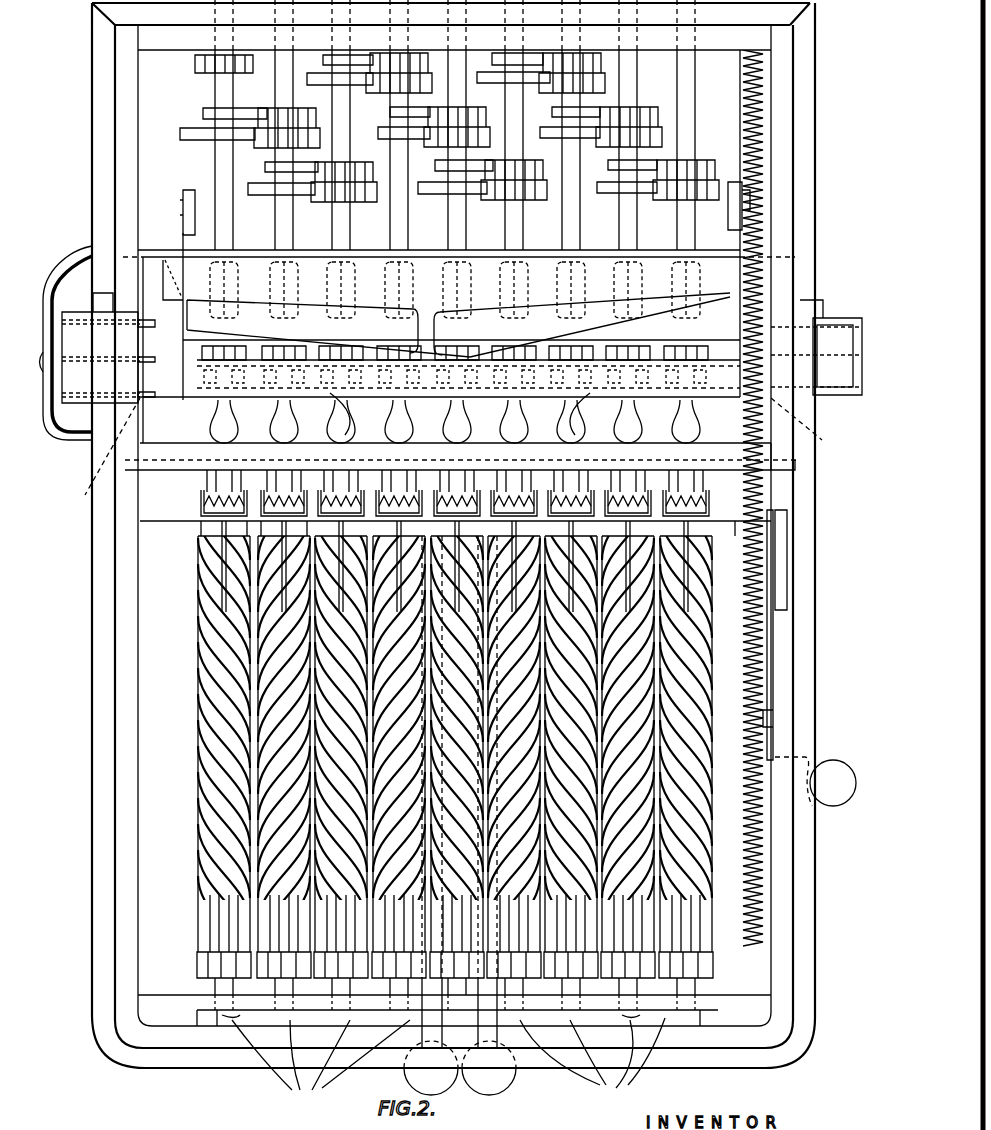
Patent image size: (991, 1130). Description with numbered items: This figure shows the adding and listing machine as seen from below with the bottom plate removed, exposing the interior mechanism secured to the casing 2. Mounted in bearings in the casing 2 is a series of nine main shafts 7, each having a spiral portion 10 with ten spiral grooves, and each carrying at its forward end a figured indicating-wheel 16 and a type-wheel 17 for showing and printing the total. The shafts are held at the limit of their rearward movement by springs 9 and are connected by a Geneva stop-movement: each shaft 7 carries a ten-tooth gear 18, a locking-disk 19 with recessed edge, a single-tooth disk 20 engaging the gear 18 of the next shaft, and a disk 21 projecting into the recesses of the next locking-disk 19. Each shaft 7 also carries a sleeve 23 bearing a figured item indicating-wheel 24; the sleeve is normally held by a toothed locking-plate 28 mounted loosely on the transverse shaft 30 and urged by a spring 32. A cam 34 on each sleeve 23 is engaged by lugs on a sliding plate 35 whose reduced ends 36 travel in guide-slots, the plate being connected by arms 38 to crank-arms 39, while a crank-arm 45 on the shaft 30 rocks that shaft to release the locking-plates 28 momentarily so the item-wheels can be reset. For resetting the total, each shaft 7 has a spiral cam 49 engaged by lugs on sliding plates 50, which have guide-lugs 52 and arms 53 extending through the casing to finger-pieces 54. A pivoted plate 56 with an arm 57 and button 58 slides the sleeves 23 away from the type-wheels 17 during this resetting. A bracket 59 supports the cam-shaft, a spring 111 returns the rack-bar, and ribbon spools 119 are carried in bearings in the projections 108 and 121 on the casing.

The casing 2 is at (105, 638).
The main shaft 7 is at (214, 96).
The spring 9 is at (443, 1062).
The spiral portion 10 is at (210, 878).
The indicating-wheel 16 is at (205, 966).
The type-wheel 17 is at (300, 355).
The ten-tooth gear 18 is at (195, 66).
The locking-disk 19 is at (262, 140).
The single-tooth disk 20 is at (203, 114).
The disk 21 is at (185, 134).
The sleeve 23 is at (280, 440).
The indicating-wheel 24 is at (205, 487).
The locking-plate 28 is at (200, 524).
The transverse shaft 30 is at (728, 528).
The spring 32 is at (222, 590).
The cam 34 is at (466, 400).
The sliding plate 35 is at (204, 398).
The reduced ends 36 is at (166, 392).
The arm 38 is at (183, 342).
The crank-arm 39 is at (183, 215).
The crank-arm 45 is at (780, 542).
The spiral cam 49 is at (432, 300).
The sliding plate 50 is at (455, 300).
The guide-lug 52 is at (828, 250).
The arm 53 is at (420, 698).
The finger-piece 54 is at (400, 1075).
The plate 56 is at (758, 456).
The arm 57 is at (762, 650).
The button 58 is at (835, 762).
The bracket 59 is at (70, 272).
The projection 108 is at (835, 320).
The spring 111 is at (755, 112).
The spool 119 is at (140, 330).
The projection 121 is at (101, 348).